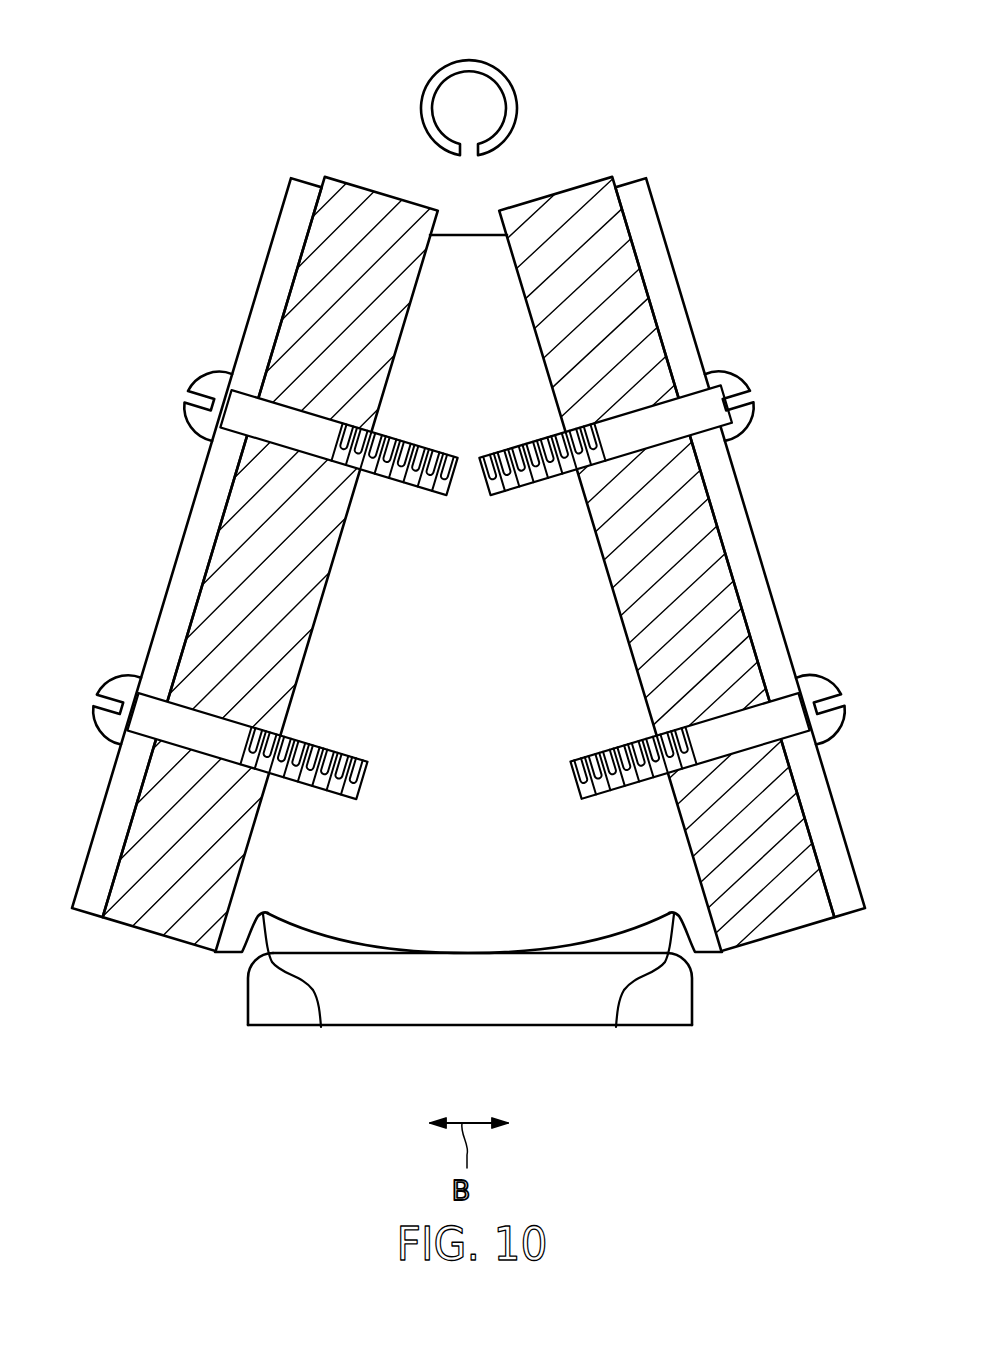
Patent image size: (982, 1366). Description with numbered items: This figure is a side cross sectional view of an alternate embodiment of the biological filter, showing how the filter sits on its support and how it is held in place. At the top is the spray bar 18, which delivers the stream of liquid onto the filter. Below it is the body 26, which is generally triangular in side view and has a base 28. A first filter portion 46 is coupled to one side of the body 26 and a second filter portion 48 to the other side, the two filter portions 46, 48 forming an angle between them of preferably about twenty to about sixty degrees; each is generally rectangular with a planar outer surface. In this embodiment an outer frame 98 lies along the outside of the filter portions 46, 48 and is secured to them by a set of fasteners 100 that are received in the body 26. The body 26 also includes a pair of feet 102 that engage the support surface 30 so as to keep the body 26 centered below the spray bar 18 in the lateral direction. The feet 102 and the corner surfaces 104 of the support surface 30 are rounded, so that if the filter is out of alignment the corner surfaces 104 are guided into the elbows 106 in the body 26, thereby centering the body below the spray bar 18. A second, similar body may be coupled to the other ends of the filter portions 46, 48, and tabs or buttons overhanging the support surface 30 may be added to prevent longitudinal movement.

The spray bar 18 is at (507, 76).
The body 26 is at (458, 564).
The base 28 is at (340, 937).
The support surface 30 is at (452, 1015).
The first filter portion 46 is at (361, 192).
The second filter portion 48 is at (581, 192).
The outer frame 98 is at (190, 550).
The fasteners 100 is at (252, 402).
The feet 102 is at (232, 930).
The corner surfaces 104 is at (252, 962).
The elbows 106 is at (321, 1027).